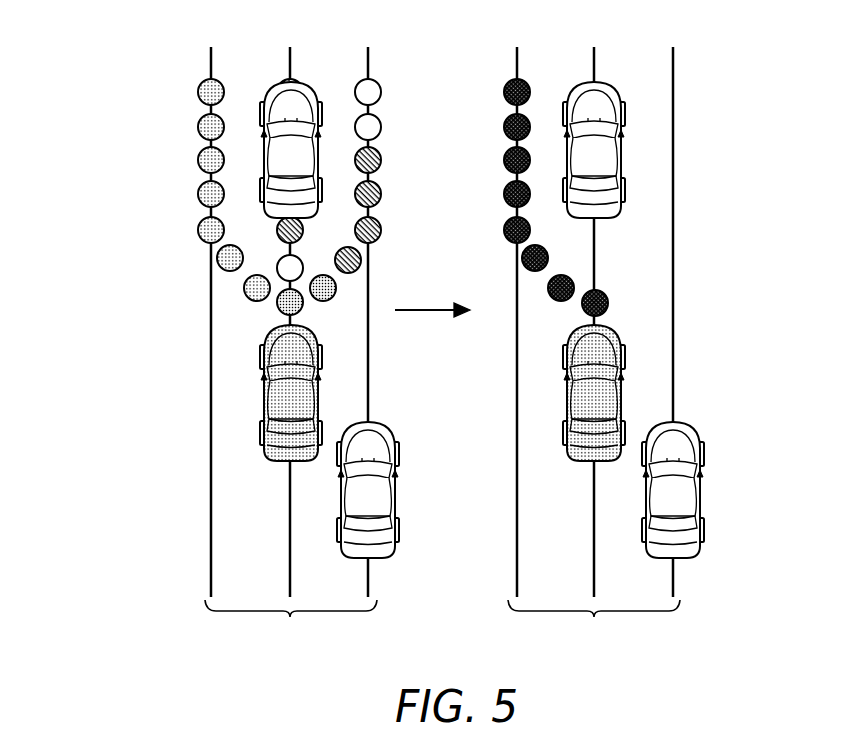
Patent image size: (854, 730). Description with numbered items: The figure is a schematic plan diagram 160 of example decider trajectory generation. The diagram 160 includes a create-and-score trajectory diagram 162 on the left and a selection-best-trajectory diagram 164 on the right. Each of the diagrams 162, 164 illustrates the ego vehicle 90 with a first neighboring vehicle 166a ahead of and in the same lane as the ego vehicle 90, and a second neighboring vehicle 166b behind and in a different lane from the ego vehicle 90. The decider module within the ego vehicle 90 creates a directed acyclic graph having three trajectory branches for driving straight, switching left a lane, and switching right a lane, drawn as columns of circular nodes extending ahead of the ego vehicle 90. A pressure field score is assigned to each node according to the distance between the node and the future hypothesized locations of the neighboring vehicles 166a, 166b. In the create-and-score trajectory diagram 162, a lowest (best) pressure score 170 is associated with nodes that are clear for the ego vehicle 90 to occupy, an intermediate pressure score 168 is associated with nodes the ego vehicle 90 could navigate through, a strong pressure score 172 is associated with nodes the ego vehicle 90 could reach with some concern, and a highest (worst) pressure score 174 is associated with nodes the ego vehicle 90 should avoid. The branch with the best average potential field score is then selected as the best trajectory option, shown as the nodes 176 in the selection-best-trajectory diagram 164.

The schematic plan diagram 160 is at (160, 76).
The create-and-score trajectory diagram 162 is at (290, 617).
The selection-best-trajectory diagram 164 is at (594, 617).
The first neighboring vehicle 166a is at (318, 100).
The second neighboring vehicle 166b is at (396, 497).
The intermediate pressure score 168 is at (199, 195).
The lowest pressure score 170 is at (277, 303).
The strong pressure score 172 is at (277, 268).
The highest pressure score 174 is at (381, 195).
The nodes 176 is at (505, 127).
The ego vehicle 90 is at (263, 393).